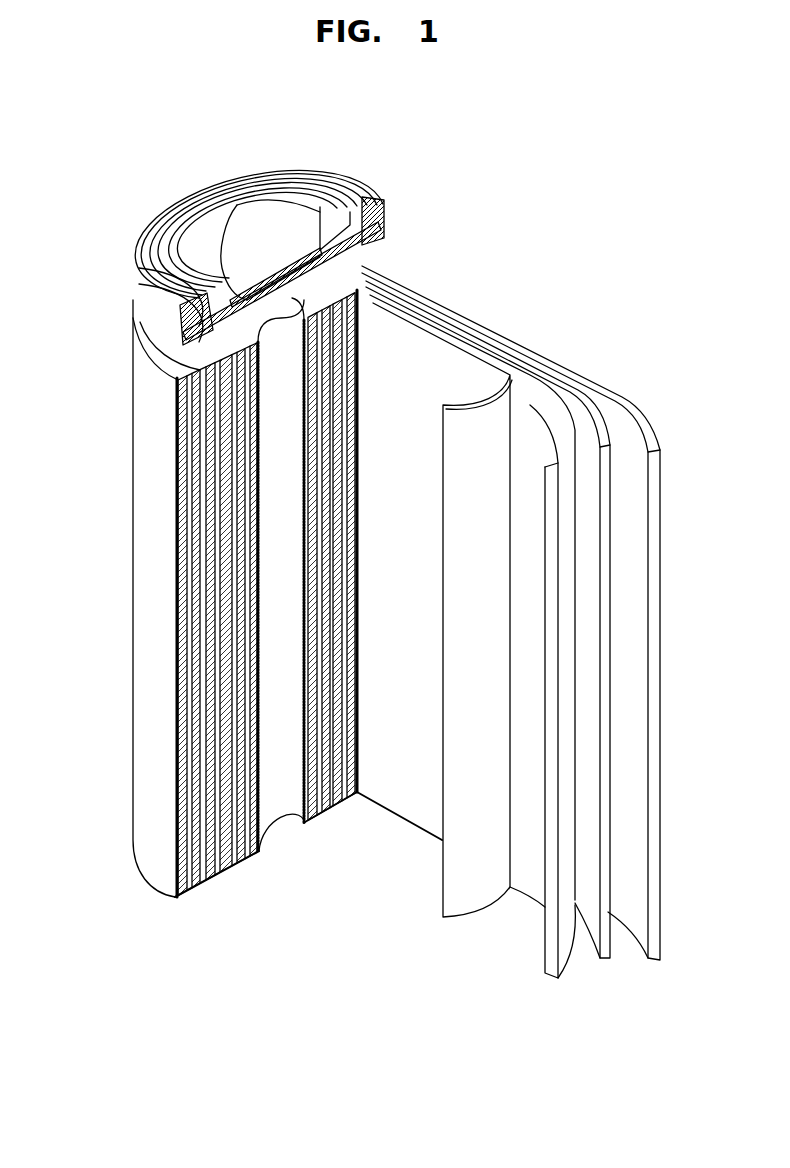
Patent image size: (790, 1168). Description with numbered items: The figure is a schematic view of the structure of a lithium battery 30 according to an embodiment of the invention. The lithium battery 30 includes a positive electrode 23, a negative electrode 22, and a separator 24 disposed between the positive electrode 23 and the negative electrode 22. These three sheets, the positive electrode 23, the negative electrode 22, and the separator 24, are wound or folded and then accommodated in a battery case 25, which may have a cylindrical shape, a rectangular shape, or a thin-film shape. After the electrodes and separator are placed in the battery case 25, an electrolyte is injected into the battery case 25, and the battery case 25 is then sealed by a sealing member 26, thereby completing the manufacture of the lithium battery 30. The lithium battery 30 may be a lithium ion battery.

The lithium battery 30 is at (503, 128).
The battery case 25 is at (133, 579).
The sealing member 26 is at (255, 215).
The negative electrode 22 is at (635, 415).
The positive electrode 23 is at (562, 415).
The separator 24 is at (600, 415).